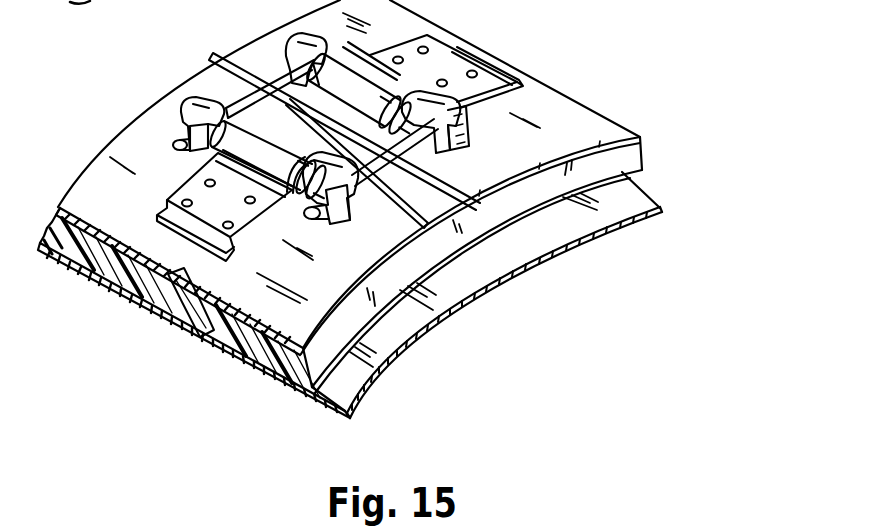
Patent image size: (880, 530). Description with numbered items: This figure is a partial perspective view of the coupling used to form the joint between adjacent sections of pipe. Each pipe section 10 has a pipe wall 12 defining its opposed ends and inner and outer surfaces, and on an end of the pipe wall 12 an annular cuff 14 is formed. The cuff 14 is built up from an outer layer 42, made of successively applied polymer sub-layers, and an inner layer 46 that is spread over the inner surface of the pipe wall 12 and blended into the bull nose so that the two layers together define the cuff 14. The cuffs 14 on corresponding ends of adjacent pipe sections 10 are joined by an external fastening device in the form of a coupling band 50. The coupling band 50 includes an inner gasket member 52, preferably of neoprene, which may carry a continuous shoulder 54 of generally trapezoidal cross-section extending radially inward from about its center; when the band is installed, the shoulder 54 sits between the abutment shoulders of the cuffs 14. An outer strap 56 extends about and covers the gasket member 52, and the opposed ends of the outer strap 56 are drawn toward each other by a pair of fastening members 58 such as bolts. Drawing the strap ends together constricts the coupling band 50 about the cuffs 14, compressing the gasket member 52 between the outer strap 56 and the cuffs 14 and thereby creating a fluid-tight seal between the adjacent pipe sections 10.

The pipe section 10 is at (382, 213).
The pipe wall 12 is at (433, 328).
The annular cuff 14 is at (106, 288).
The outer layer 42 is at (110, 245).
The inner layer 46 is at (167, 312).
The coupling band 50 is at (385, 133).
The gasket member 52 is at (504, 295).
The shoulder 54 is at (183, 318).
The outer strap 56 is at (606, 130).
The fastening member 58 is at (277, 80).